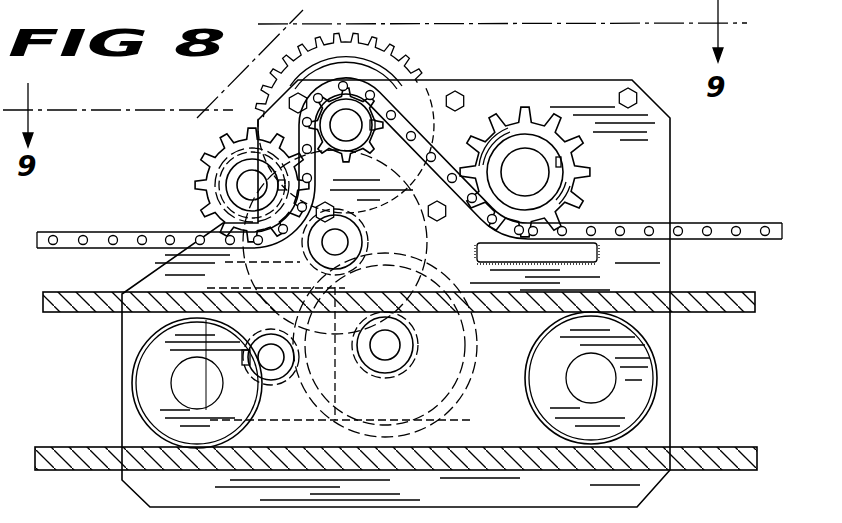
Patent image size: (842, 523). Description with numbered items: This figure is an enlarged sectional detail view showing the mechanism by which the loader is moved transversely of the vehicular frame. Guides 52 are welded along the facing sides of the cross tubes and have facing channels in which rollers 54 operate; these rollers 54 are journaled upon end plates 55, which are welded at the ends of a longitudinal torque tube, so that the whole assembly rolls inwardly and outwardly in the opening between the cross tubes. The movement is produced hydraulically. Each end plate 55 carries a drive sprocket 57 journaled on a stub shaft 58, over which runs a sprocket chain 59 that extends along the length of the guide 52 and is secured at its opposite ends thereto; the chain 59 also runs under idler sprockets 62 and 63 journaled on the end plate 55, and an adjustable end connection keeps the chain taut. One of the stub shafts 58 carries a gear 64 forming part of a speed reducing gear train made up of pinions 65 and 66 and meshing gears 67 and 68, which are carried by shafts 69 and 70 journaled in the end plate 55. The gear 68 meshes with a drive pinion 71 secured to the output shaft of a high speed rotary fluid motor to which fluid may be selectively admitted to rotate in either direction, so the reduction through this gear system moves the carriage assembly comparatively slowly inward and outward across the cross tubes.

In FIG. 8, the guides 52 is at (100, 474).
In FIG. 8, the rollers 54 is at (152, 395).
In FIG. 8, the end plates 55 is at (587, 87).
The drive sprockets 57 is at (388, 100).
The stub shafts 58 is at (353, 120).
The sprocket chains 59 is at (690, 222).
The idler sprocket 62 is at (527, 128).
The idler sprocket 63 is at (217, 142).
The gear 64 is at (377, 45).
The pinion 65 is at (257, 270).
The pinion 66 is at (466, 343).
The meshing gear 67 is at (423, 250).
The meshing gear 68 is at (472, 385).
The journaled shaft 69 is at (340, 242).
The journaled shaft 70 is at (388, 350).
The drive pinion 71 is at (275, 398).